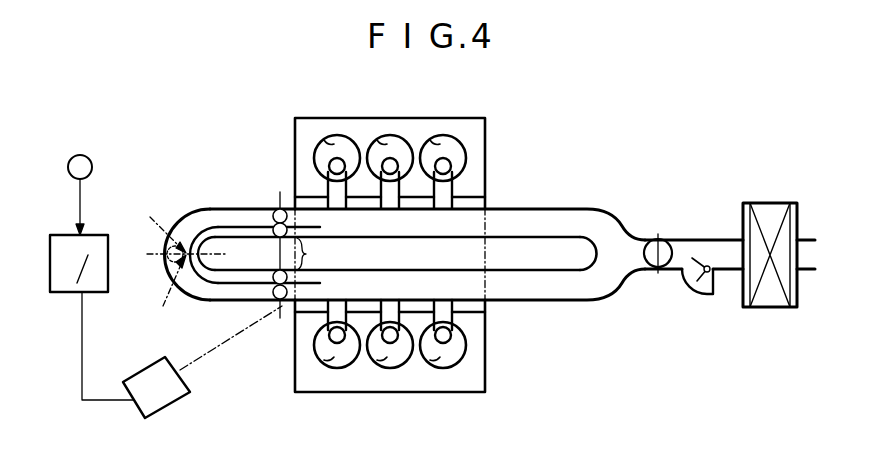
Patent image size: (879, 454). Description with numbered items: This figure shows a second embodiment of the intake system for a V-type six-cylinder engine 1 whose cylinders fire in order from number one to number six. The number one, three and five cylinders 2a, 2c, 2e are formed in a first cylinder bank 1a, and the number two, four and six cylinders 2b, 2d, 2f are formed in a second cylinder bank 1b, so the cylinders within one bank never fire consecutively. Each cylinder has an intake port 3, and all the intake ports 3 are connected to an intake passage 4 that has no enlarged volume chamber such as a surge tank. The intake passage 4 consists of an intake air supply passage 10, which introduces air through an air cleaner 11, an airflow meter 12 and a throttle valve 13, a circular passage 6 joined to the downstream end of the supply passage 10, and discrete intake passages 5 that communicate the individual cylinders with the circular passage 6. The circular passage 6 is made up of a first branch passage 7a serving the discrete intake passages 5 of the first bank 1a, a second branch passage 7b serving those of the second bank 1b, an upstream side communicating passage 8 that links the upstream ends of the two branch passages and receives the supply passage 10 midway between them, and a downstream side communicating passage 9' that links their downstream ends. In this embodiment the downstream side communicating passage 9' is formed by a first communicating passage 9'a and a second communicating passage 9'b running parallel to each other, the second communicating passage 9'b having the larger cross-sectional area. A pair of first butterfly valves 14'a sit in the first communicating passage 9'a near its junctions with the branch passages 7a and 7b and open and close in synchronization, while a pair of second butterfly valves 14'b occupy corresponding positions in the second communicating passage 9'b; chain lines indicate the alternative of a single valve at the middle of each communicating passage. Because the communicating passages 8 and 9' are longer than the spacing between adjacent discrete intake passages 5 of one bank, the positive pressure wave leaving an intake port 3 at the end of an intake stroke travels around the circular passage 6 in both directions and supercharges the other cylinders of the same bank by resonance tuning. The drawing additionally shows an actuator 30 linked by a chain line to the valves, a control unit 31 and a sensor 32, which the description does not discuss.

The engine 1 is at (487, 122).
The first cylinder bank 1a is at (486, 160).
The second cylinder bank 1b is at (486, 372).
The No. 1 cylinder 2a is at (337, 136).
The No. 2 cylinder 2b is at (337, 368).
The No. 3 cylinder 2c is at (390, 136).
The No. 4 cylinder 2d is at (390, 368).
The No. 5 cylinder 2e is at (444, 136).
The No. 6 cylinder 2f is at (443, 368).
The intake port 3 is at (329, 163).
The intake passage 4 is at (637, 249).
The discrete intake passage 5 is at (340, 200).
The circular passage 6 is at (540, 218).
The first branch passage 7a is at (396, 222).
The second branch passage 7b is at (418, 290).
The upstream side communicating passage 8 is at (588, 290).
The downstream side communicating passage 9' is at (187, 231).
The first communicating passage 9'a is at (255, 208).
The second communicating passage 9'b is at (253, 300).
The intake air supply passage 10 is at (695, 245).
The air cleaner 11 is at (765, 310).
The airflow meter 12 is at (700, 295).
The throttle valve 13 is at (671, 272).
The first butterfly valves 14'a is at (246, 285).
The second butterfly valves 14'b is at (203, 262).
The drive unit 30 is at (172, 397).
The control unit 31 is at (100, 293).
The sensor 32 is at (92, 160).